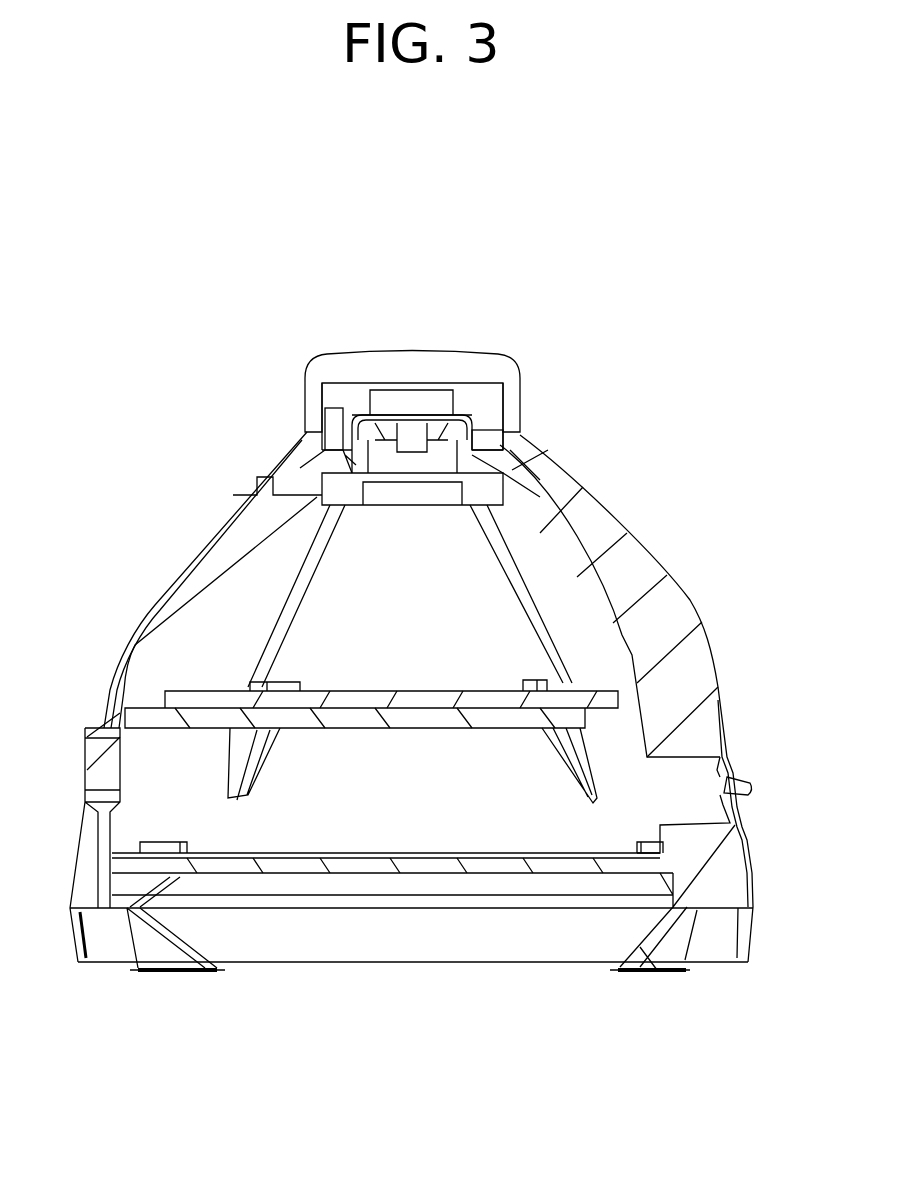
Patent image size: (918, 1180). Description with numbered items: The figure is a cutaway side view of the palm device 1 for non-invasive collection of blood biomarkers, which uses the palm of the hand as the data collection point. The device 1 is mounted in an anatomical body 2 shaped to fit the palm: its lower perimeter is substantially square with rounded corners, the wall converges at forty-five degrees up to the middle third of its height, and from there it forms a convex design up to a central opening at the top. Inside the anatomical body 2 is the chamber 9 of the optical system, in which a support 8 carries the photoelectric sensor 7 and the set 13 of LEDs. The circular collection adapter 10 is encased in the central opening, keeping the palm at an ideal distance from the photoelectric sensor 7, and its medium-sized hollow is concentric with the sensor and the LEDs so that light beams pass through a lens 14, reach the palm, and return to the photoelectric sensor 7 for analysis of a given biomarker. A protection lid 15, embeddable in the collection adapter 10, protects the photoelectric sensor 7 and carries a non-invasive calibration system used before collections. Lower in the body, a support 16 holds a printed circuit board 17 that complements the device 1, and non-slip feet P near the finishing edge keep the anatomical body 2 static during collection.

The device 1 is at (738, 277).
The anatomical body 2 is at (720, 578).
The photoelectric sensor 7 is at (415, 440).
The support 8 is at (500, 492).
The chamber 9 is at (306, 452).
The collection adapter 10 is at (355, 405).
The set of LEDs 13 is at (323, 430).
The lens 14 is at (500, 380).
The protection lid 15 is at (388, 350).
The support 16 is at (203, 705).
The printed circuit board 17 is at (153, 720).
The non-slip feet P is at (160, 960).